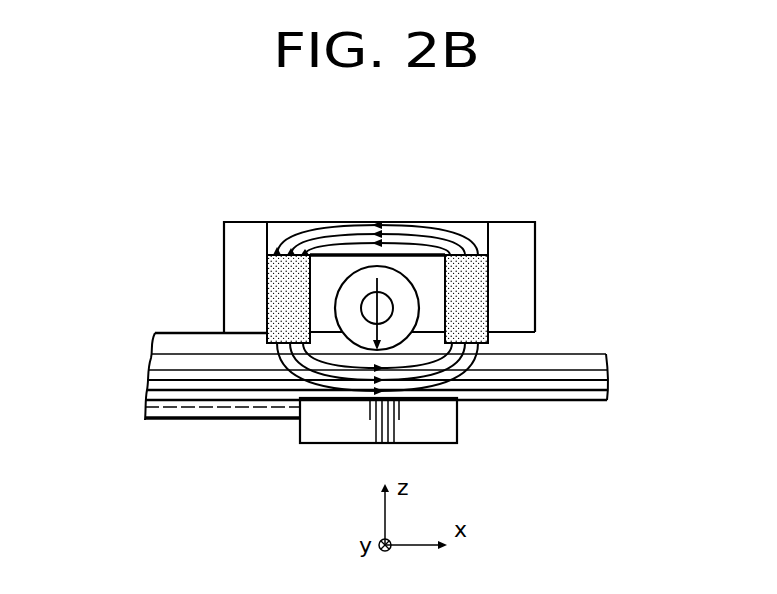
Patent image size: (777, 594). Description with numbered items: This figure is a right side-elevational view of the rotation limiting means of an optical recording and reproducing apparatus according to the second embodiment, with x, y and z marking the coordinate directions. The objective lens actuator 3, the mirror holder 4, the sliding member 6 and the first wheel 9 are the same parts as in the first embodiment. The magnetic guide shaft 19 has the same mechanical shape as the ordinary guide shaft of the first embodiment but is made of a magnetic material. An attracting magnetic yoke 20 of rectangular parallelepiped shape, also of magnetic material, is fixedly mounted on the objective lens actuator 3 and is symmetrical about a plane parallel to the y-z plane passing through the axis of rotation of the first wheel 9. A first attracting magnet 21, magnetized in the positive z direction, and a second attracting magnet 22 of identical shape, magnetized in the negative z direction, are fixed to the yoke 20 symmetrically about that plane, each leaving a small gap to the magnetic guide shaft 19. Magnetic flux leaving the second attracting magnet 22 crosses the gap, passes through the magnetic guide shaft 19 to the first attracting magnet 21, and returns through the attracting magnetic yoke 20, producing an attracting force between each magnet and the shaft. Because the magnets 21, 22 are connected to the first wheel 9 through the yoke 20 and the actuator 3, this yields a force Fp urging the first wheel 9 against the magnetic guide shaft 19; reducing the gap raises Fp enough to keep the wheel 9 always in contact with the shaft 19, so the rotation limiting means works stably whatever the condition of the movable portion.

The objective lens actuator 3 is at (528, 310).
The mirror holder 4 is at (442, 433).
The sliding member 6 is at (235, 408).
The first wheel 9 is at (346, 273).
The magnetic guide shaft 19 is at (583, 358).
The attracting magnetic yoke 20 is at (378, 224).
The first attracting magnet 21 is at (483, 278).
The second attracting magnet 22 is at (267, 285).
The force Fp is at (392, 301).